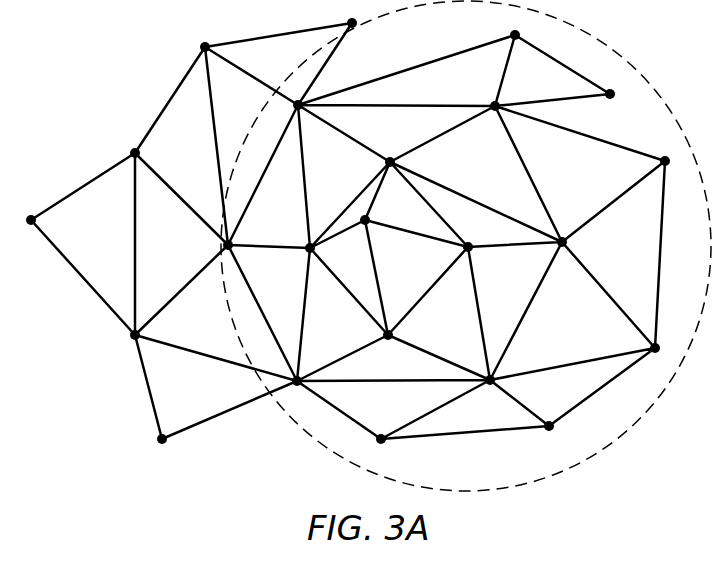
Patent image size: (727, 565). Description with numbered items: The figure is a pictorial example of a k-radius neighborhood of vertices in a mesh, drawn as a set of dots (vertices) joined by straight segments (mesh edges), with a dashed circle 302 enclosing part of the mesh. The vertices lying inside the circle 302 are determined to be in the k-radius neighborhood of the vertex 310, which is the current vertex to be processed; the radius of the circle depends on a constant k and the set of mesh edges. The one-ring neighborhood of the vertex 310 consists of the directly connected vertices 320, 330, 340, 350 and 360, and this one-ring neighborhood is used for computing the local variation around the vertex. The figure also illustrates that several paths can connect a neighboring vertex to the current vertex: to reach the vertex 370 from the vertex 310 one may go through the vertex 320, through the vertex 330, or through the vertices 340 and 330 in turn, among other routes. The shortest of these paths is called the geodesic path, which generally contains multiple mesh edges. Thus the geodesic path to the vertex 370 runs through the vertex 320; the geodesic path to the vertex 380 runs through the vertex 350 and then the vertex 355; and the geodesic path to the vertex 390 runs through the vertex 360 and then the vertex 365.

The circle 302 is at (618, 52).
The vertex 310 is at (471, 250).
The vertex 320 is at (565, 242).
The vertex 330 is at (490, 383).
The vertex 340 is at (388, 338).
The vertex 350 is at (368, 223).
The vertex 355 is at (308, 246).
The vertex 360 is at (390, 160).
The vertex 365 is at (494, 104).
The vertex 370 is at (655, 351).
The vertex 380 is at (231, 248).
The vertex 390 is at (512, 35).